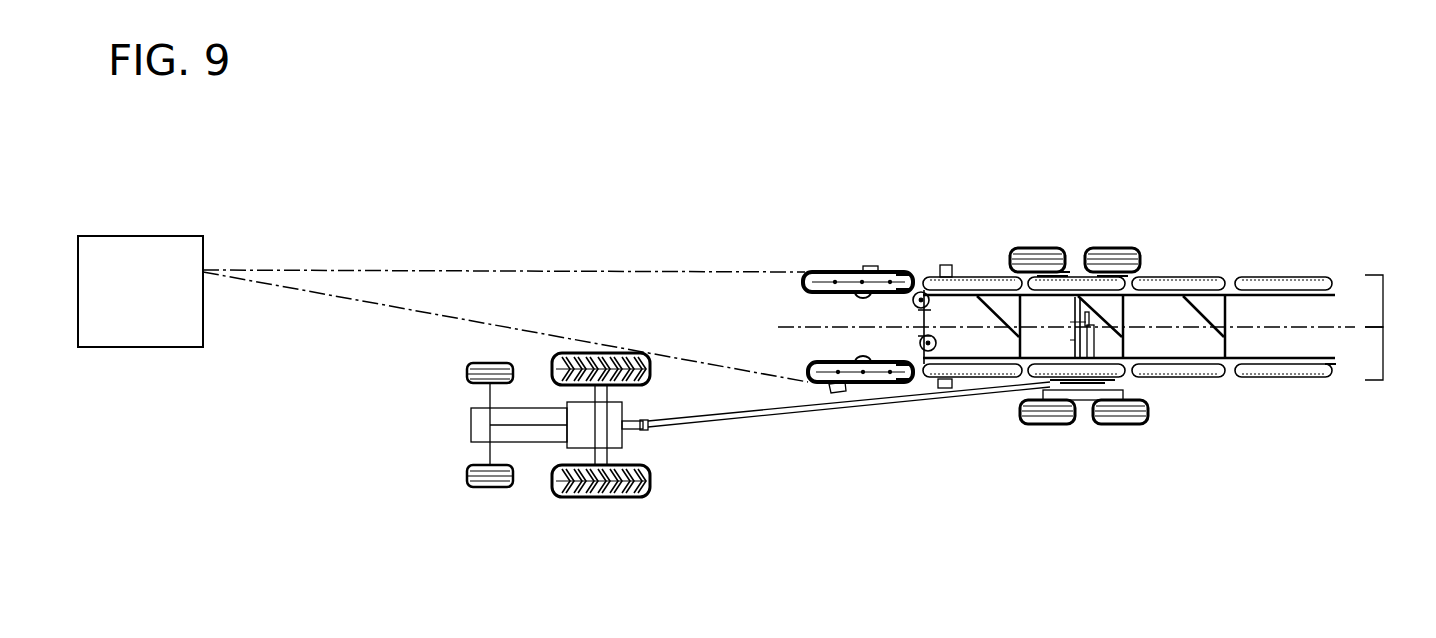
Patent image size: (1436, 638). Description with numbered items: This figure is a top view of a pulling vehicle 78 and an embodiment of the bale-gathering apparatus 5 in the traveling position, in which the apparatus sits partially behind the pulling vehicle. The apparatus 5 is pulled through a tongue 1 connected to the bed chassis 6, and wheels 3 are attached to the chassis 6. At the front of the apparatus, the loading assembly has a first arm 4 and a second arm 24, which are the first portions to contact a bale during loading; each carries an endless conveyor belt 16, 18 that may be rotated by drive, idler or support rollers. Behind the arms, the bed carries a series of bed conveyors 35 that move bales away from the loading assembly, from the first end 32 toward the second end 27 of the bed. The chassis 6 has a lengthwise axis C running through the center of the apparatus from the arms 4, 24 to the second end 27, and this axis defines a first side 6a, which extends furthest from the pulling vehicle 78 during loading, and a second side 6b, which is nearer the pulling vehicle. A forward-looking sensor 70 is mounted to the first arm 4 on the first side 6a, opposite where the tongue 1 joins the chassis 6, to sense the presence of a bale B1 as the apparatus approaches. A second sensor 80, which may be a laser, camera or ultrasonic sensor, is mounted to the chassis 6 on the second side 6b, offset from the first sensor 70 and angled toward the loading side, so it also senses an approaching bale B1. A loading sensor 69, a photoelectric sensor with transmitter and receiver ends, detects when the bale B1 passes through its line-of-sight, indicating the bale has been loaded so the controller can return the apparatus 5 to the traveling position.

The tongue 1 is at (768, 411).
The wheels 3 is at (1100, 248).
The first arm 4 is at (805, 278).
The apparatus for gathering bales 5 is at (1144, 309).
The bed chassis 6 is at (960, 297).
The first side of the apparatus 6a is at (1383, 300).
The second side of the apparatus 6b is at (1383, 355).
The endless conveyor belt 16 is at (823, 290).
The endless conveyor belt 18 is at (825, 374).
The second arm 24 is at (818, 363).
The second end of the bed 27 is at (1335, 366).
The first end of the bed 32 is at (920, 350).
The bed conveyor 35 is at (937, 270).
The loading sensor 69 is at (952, 262).
The forward looking sensor 70 is at (871, 266).
The pulling vehicle 78 is at (595, 512).
The second sensor 80 is at (835, 394).
The lengthwise axis C is at (1340, 325).
The bale B1 is at (140, 291).